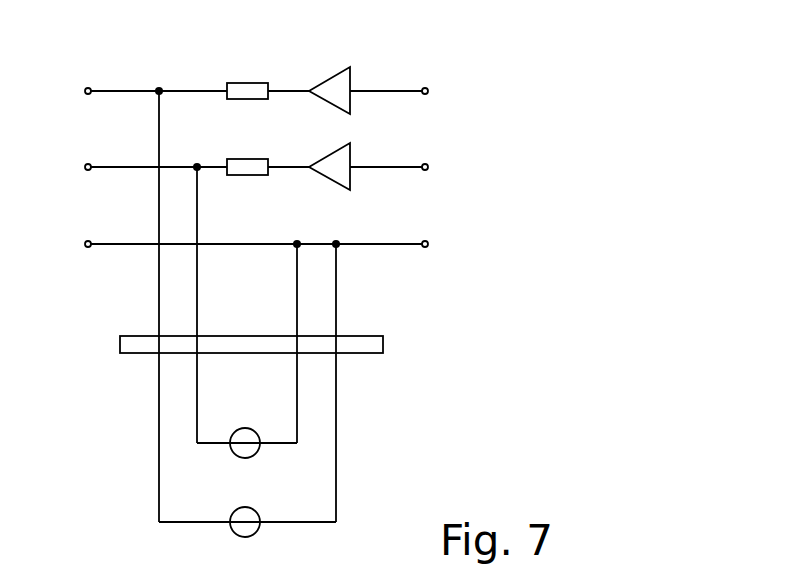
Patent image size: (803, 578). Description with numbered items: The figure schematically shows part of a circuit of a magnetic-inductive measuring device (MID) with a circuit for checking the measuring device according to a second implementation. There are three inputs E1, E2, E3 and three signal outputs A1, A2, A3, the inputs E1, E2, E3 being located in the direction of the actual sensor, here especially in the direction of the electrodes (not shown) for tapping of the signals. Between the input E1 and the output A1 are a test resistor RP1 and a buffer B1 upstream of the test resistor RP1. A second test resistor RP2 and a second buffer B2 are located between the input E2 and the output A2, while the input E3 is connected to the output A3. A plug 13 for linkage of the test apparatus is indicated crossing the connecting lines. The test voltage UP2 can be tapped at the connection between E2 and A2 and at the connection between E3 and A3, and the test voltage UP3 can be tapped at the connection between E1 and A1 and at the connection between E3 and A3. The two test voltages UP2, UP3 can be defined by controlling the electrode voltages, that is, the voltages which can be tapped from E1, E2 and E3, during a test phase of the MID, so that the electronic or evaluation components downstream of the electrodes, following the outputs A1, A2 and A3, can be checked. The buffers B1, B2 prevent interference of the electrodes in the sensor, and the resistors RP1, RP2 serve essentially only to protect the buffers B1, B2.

The plug 13 is at (369, 337).
The signal output A1 is at (134, 92).
The signal output A2 is at (134, 168).
The signal output A3 is at (232, 245).
The input E1 is at (410, 92).
The input E2 is at (410, 168).
The input E3 is at (446, 245).
The test resistor RP1 is at (237, 91).
The second test resistor RP2 is at (232, 167).
The buffer B1 is at (329, 88).
The second buffer B2 is at (329, 172).
The test voltage UP2 is at (247, 424).
The test voltage UP3 is at (247, 503).